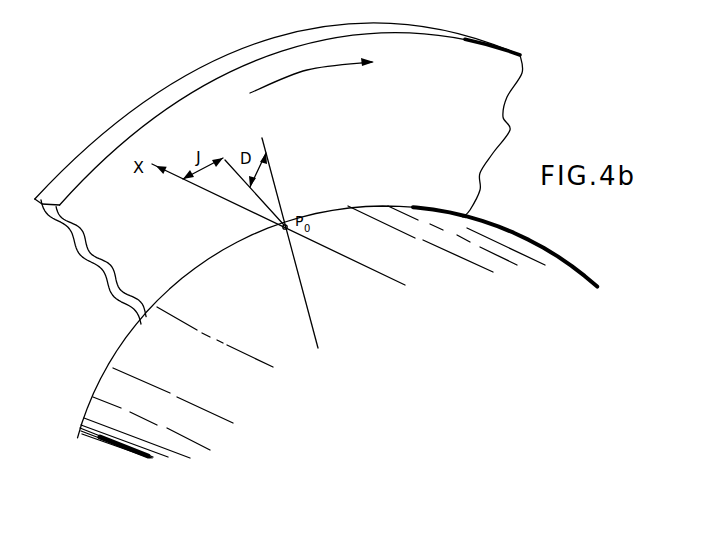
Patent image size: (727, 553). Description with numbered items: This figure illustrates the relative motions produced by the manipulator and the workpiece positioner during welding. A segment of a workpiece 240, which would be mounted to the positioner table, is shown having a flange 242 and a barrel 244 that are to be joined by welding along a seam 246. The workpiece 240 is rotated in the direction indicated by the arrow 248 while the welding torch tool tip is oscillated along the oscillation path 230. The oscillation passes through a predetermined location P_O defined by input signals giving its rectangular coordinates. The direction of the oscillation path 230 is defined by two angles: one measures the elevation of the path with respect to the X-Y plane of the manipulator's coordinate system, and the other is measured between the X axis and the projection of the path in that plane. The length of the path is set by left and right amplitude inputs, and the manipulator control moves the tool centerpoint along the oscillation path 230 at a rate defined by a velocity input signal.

The oscillation path 230 is at (266, 140).
The workpiece 240 is at (103, 326).
The flange 242 is at (200, 66).
The barrel 244 is at (507, 239).
The seam 246 is at (356, 204).
The arrow 248 is at (293, 77).